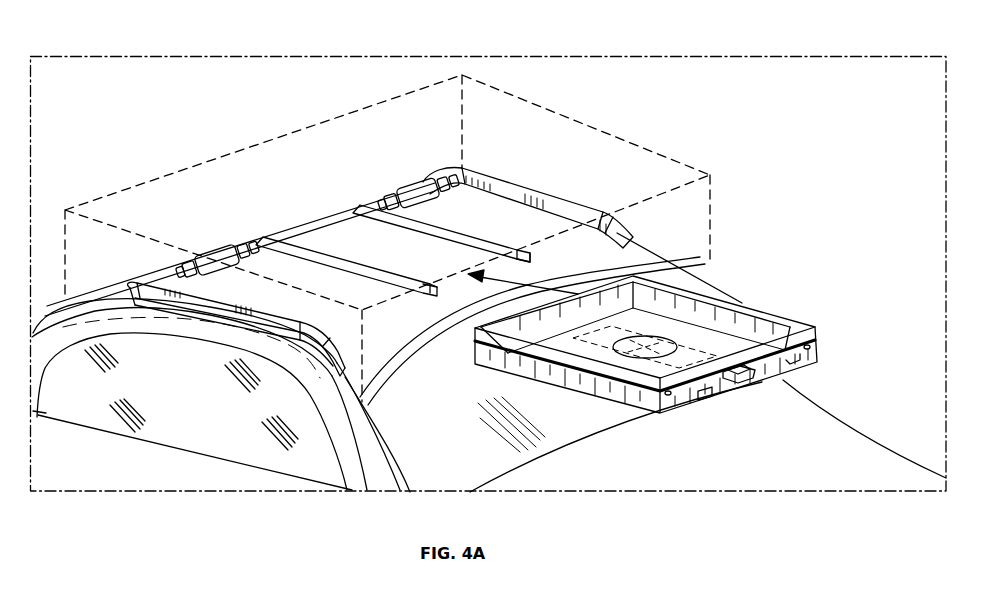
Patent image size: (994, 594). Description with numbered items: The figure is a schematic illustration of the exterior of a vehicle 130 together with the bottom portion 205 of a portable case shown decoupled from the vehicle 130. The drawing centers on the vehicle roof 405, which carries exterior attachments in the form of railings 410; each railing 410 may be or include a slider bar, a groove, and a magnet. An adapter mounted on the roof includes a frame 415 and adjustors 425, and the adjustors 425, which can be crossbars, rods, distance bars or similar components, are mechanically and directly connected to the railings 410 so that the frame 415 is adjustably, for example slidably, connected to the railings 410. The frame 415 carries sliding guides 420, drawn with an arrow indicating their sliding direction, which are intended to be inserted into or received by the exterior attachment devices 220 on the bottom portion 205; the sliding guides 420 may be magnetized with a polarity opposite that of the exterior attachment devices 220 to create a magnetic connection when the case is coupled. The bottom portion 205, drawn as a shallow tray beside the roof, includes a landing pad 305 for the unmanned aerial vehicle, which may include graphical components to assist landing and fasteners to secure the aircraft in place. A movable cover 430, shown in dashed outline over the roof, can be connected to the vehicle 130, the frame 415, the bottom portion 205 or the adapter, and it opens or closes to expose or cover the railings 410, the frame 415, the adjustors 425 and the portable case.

The vehicle 130 is at (843, 450).
The bottom portion 205 is at (817, 330).
The exterior attachment devices 220 is at (702, 398).
The landing pad 305 is at (725, 345).
The vehicle roof 405 is at (377, 343).
The exterior railing 410 is at (130, 290).
The frame 415 is at (290, 232).
The sliding guides 420 is at (665, 261).
The adjustors 425 is at (220, 247).
The cover 430 is at (668, 157).